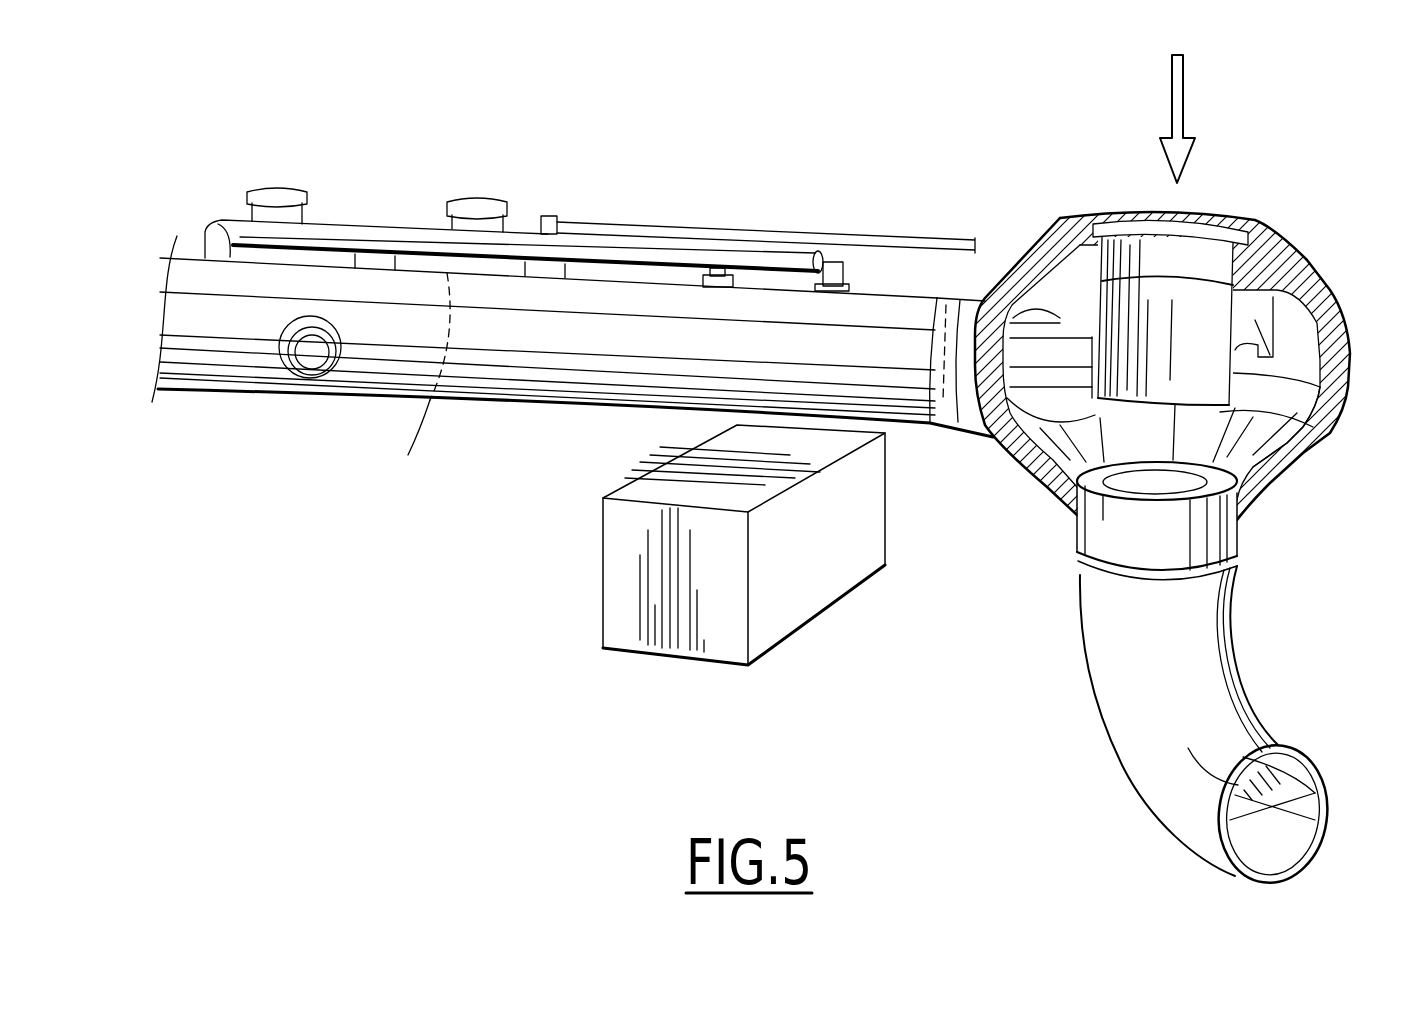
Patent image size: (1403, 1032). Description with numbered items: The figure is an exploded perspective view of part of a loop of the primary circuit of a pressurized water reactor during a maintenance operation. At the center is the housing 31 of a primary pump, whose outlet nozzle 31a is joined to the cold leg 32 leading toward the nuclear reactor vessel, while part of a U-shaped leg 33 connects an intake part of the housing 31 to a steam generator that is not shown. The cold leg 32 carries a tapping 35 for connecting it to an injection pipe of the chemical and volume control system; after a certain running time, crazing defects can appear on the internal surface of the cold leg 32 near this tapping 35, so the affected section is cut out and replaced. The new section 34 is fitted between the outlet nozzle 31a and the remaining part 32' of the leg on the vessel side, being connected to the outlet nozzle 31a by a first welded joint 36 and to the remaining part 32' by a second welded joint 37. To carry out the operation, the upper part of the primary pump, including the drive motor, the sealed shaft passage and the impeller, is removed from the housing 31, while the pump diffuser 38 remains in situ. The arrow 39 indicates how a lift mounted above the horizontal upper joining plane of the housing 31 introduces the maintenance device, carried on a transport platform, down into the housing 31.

The housing of the primary pump 31 is at (1347, 320).
The outlet nozzle 31a is at (948, 400).
The cold leg 32 is at (572, 284).
The remaining part of the primary leg 32' is at (192, 357).
The U-shaped leg 33 is at (1220, 723).
The section of the cold leg 34 is at (577, 385).
The tapping 35 is at (840, 262).
The first welded joint 36 is at (932, 343).
The second welded joint 37 is at (420, 389).
The pump diffuser 38 is at (1320, 388).
The arrow 39 is at (1177, 148).